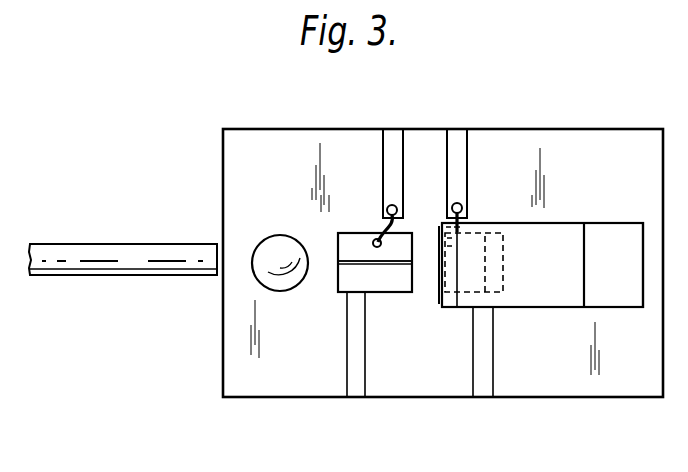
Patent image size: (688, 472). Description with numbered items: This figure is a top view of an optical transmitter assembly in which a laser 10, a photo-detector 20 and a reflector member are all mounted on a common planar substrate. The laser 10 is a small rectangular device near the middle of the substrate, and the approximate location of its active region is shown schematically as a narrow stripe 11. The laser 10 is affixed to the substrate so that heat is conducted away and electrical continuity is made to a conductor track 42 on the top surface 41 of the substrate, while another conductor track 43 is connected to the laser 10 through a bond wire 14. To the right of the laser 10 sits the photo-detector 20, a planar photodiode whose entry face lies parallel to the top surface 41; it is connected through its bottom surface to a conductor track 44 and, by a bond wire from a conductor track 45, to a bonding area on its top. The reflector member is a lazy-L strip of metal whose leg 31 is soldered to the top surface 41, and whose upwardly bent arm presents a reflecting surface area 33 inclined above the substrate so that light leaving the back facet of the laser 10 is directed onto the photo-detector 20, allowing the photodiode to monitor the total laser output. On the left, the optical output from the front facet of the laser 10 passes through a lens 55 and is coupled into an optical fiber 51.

The laser 10 is at (378, 283).
The narrow stripe 11 is at (357, 262).
The bond wire 14 is at (390, 228).
The photo-detector 20 is at (483, 233).
The leg 31 is at (622, 229).
The reflecting surface area 33 is at (496, 297).
The top surface 41 is at (641, 361).
The conductor track 42 is at (355, 389).
The conductor track 43 is at (396, 135).
The conductor track 44 is at (484, 390).
The conductor track 45 is at (460, 137).
The optical fiber 51 is at (80, 268).
The lens 55 is at (256, 247).